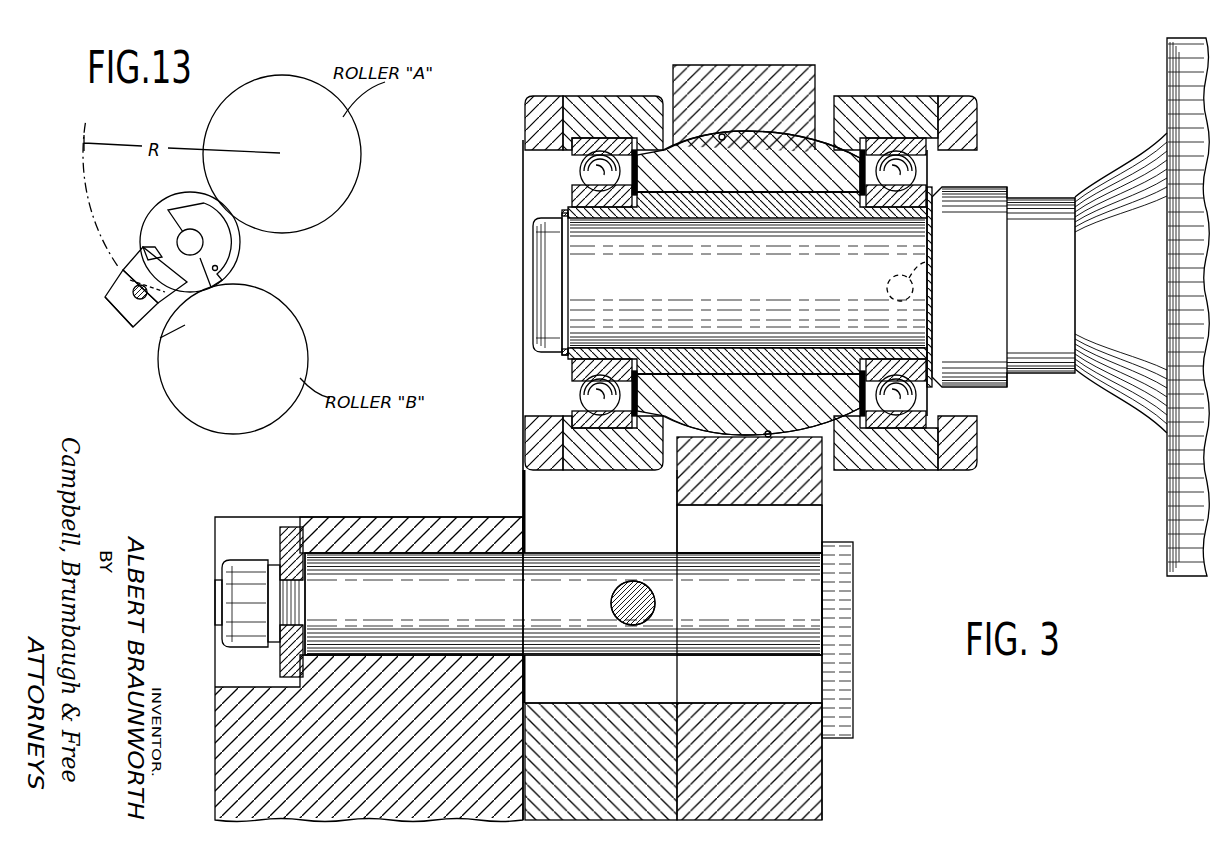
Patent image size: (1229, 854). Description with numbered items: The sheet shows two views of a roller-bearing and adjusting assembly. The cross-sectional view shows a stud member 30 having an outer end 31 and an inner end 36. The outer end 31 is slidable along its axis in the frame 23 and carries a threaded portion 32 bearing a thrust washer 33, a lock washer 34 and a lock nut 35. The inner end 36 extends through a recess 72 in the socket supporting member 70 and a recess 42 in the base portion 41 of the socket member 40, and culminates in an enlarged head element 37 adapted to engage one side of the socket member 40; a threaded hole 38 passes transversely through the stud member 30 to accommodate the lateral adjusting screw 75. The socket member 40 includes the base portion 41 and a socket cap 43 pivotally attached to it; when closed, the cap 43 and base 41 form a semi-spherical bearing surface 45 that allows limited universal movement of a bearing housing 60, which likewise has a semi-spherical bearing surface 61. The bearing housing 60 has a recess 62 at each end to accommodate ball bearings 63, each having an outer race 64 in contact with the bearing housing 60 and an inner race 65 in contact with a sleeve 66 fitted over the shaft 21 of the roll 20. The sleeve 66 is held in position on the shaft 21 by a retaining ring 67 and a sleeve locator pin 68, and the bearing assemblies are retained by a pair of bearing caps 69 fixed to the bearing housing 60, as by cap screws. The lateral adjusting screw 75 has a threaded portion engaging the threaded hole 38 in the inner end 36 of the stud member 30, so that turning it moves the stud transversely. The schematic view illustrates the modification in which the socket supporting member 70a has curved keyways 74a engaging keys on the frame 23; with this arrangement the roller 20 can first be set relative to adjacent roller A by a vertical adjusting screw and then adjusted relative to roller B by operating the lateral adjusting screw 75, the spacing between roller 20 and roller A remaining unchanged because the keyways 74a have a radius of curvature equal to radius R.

In FIG. 13, the roll 20 is at (152, 217).
In FIG. 3, the roll 20 is at (1167, 522).
In FIG. 3, the shaft 21 is at (545, 260).
In FIG. 3, the frame 23 is at (450, 530).
In FIG. 13, the stud member 30 is at (133, 327).
In FIG. 3, the stud member 30 is at (562, 662).
In FIG. 3, the outer end 31 is at (372, 556).
In FIG. 3, the threaded portion 32 is at (216, 583).
In FIG. 3, the thrust washer 33 is at (292, 527).
In FIG. 3, the lock washer 34 is at (272, 563).
In FIG. 3, the lock nut 35 is at (233, 567).
In FIG. 3, the inner end 36 is at (748, 553).
In FIG. 3, the enlarged head element 37 is at (855, 592).
In FIG. 3, the threaded hole 38 is at (616, 588).
In FIG. 13, the socket member 40 is at (148, 243).
In FIG. 3, the socket member 40 is at (834, 497).
In FIG. 3, the base portion 41 is at (822, 768).
In FIG. 3, the recess 42 is at (843, 525).
In FIG. 3, the socket cap 43 is at (740, 74).
In FIG. 3, the semi-spherical bearing surface 45 is at (723, 134).
In FIG. 3, the bearing housing 60 is at (597, 92).
In FIG. 3, the semi-spherical bearing surface 61 is at (772, 130).
In FIG. 3, the recess 62 is at (637, 150).
In FIG. 3, the ball bearings 63 is at (600, 171).
In FIG. 3, the outer race 64 is at (572, 146).
In FIG. 3, the inner race 65 is at (575, 193).
In FIG. 3, the sleeve 66 is at (745, 212).
In FIG. 3, the retaining ring 67 is at (562, 358).
In FIG. 3, the sleeve locator pin 68 is at (896, 277).
In FIG. 3, the bearing caps 69 is at (977, 104).
In FIG. 3, the socket supporting member 70 is at (535, 748).
In FIG. 13, the socket supporting member 70a is at (110, 303).
In FIG. 3, the recess 72 is at (530, 498).
In FIG. 13, the keyways 74a is at (118, 277).
In FIG. 3, the lateral adjusting screw 75 is at (644, 580).